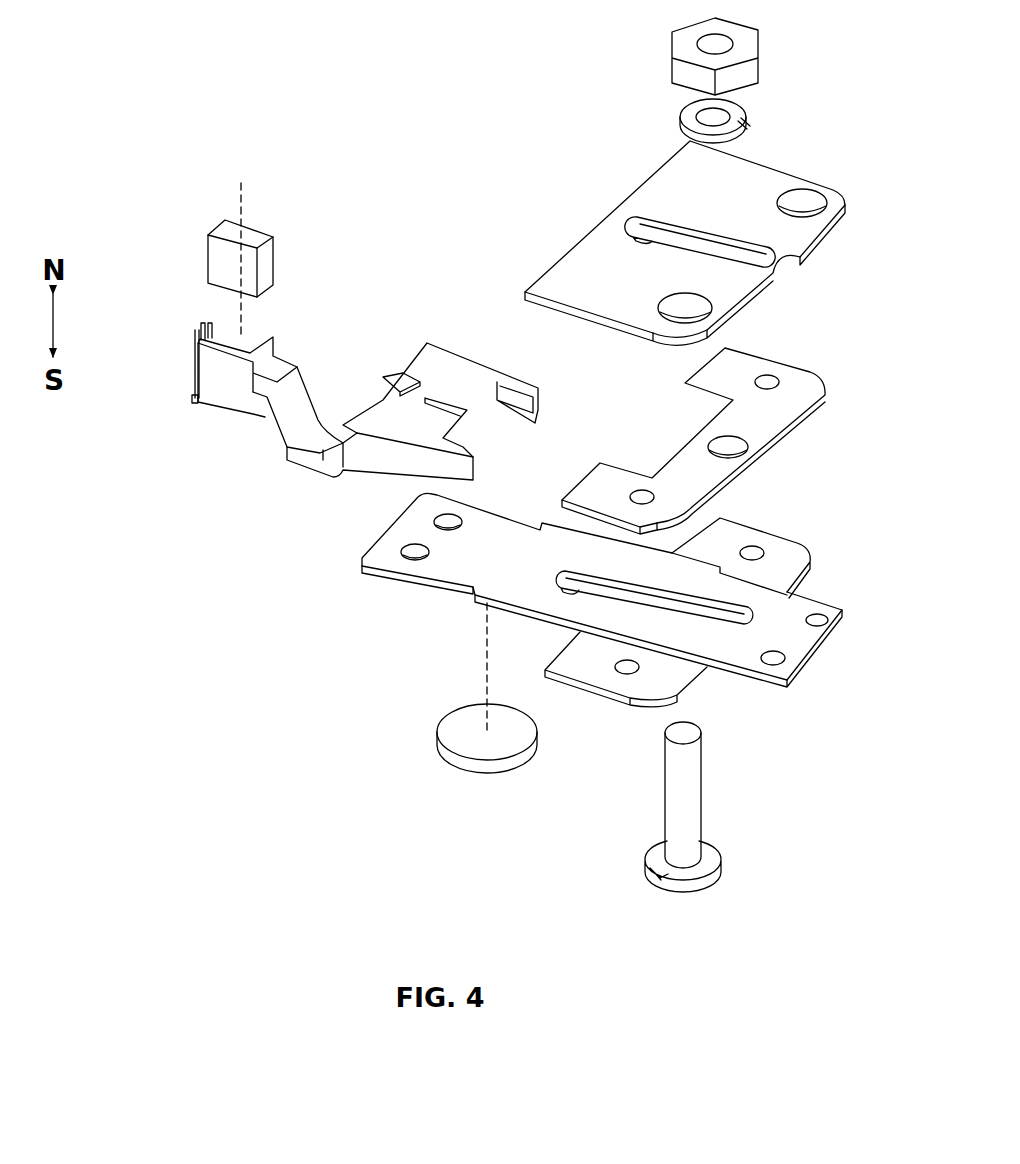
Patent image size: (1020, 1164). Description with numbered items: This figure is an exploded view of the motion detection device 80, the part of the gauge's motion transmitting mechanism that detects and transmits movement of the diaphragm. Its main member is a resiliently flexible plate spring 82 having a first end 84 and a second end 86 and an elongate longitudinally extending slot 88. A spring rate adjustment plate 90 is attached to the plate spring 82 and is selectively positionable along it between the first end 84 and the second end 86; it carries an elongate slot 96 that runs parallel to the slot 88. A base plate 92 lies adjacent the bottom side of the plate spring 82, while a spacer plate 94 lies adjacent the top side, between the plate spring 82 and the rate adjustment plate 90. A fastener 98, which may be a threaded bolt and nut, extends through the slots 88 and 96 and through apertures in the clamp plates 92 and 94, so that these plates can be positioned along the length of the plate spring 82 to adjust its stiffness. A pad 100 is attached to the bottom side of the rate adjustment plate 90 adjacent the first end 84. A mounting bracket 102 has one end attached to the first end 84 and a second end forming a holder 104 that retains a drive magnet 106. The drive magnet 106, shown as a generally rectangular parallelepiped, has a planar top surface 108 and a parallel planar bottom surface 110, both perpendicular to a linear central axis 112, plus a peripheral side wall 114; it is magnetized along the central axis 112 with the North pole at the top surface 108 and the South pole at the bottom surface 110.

The motion detection device 80 is at (268, 142).
The plate spring 82 is at (587, 590).
The first end 84 is at (393, 527).
The second end 86 is at (805, 641).
The slot 88 is at (608, 592).
The spring rate adjustment plate 90 is at (685, 243).
The base plate 92 is at (797, 545).
The spacer plate 94 is at (812, 385).
The slot 96 is at (668, 238).
The fastener 98 is at (706, 874).
The pad 100 is at (478, 779).
The mounting bracket 102 is at (407, 360).
The holder 104 is at (192, 351).
The drive magnet 106 is at (237, 259).
The top surface 108 is at (260, 238).
The bottom surface 110 is at (220, 287).
The central axis 112 is at (243, 325).
The peripheral side wall 114 is at (274, 253).